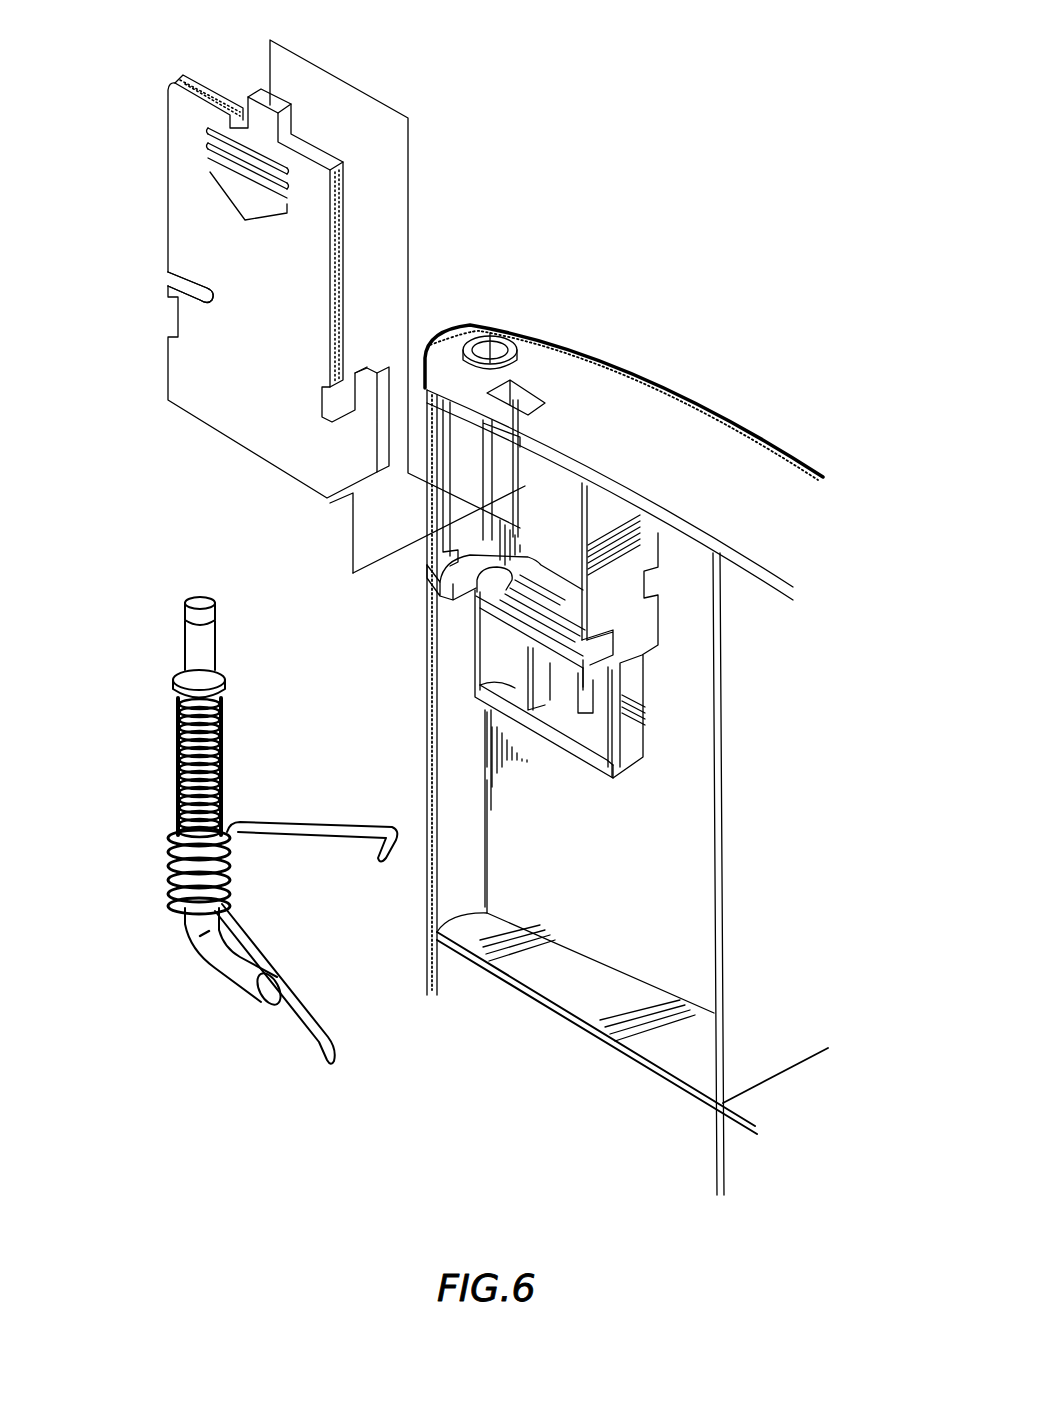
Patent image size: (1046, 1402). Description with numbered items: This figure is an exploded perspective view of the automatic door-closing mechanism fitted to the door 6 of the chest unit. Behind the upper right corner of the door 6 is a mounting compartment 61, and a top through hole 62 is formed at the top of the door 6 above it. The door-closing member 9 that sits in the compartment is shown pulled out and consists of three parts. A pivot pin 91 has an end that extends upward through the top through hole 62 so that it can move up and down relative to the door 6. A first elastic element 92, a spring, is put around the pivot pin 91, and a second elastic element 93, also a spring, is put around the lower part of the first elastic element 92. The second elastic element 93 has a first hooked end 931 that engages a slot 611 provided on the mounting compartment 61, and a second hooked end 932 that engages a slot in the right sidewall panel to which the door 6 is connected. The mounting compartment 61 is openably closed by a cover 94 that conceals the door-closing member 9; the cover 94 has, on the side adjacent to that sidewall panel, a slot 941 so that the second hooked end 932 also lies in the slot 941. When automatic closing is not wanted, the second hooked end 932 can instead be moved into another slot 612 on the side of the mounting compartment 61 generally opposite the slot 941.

The door 6 is at (693, 445).
The mounting compartment 61 is at (548, 505).
The slot 611 is at (655, 575).
The slot 612 is at (606, 652).
The top through hole 62 is at (498, 320).
The door-closing member 9 is at (163, 788).
The pivot pin 91 is at (208, 948).
The first elastic element 92 is at (225, 728).
The second elastic element 93 is at (170, 880).
The first hooked end 931 is at (310, 828).
The second hooked end 932 is at (300, 1000).
The cover 94 is at (218, 395).
The slot 941 is at (168, 278).